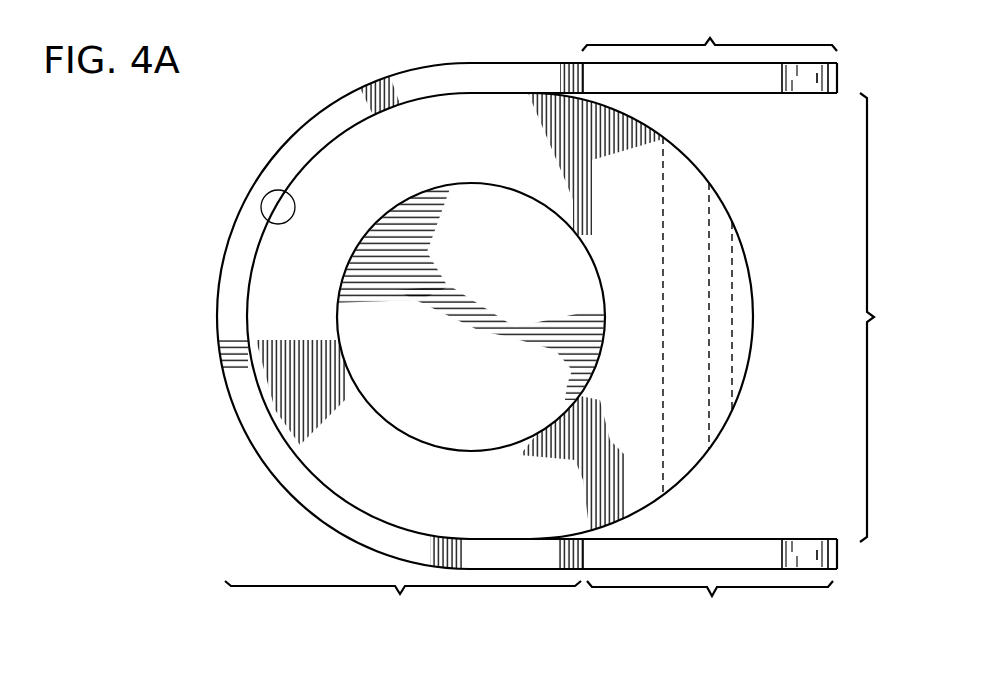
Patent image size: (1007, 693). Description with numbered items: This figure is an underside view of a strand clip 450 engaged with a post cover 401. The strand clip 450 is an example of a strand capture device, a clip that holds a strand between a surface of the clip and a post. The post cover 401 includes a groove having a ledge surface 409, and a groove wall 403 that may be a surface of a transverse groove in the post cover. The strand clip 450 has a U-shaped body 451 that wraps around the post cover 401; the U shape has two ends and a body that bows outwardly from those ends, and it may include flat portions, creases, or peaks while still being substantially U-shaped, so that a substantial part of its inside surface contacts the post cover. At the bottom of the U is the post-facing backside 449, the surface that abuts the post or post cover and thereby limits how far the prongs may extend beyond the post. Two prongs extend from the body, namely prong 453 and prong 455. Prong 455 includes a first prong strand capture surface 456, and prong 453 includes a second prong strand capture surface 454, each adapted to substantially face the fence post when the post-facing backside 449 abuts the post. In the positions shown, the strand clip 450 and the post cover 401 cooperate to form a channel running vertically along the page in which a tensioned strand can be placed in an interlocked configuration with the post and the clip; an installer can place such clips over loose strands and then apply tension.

The post cover 401 is at (892, 317).
The groove wall 403 is at (682, 174).
The ledge surface 409 is at (720, 410).
The post-facing backside 449 is at (262, 207).
The strand clip 450 is at (330, 99).
The U-shaped body 451 is at (403, 605).
The prong 453 is at (710, 605).
The second prong strand capture surface 454 is at (787, 556).
The prong 455 is at (709, 27).
The first prong strand capture surface 456 is at (786, 76).